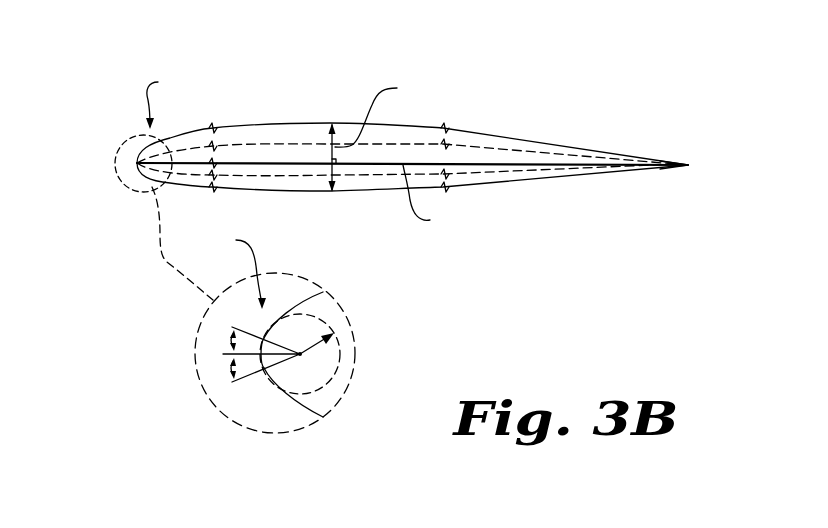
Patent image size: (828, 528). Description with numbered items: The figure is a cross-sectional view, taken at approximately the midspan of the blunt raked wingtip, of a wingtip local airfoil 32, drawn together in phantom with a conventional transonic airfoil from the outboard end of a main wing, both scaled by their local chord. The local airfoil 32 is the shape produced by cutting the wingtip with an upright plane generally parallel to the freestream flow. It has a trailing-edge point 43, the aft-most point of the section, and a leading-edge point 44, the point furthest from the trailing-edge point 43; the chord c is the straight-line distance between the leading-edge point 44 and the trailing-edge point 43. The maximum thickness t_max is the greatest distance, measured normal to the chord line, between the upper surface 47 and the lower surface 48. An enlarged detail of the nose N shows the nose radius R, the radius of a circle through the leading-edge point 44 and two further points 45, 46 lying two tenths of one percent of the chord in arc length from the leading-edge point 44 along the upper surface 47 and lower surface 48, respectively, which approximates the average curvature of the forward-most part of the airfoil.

The wingtip local airfoil 32 is at (547, 66).
The trailing-edge point 43 is at (688, 165).
The leading-edge point 44 is at (137, 163).
The upper-surface nose point 45 is at (263, 338).
The lower-surface nose point 46 is at (263, 368).
The upper surface 47 is at (288, 123).
The lower surface 48 is at (373, 189).